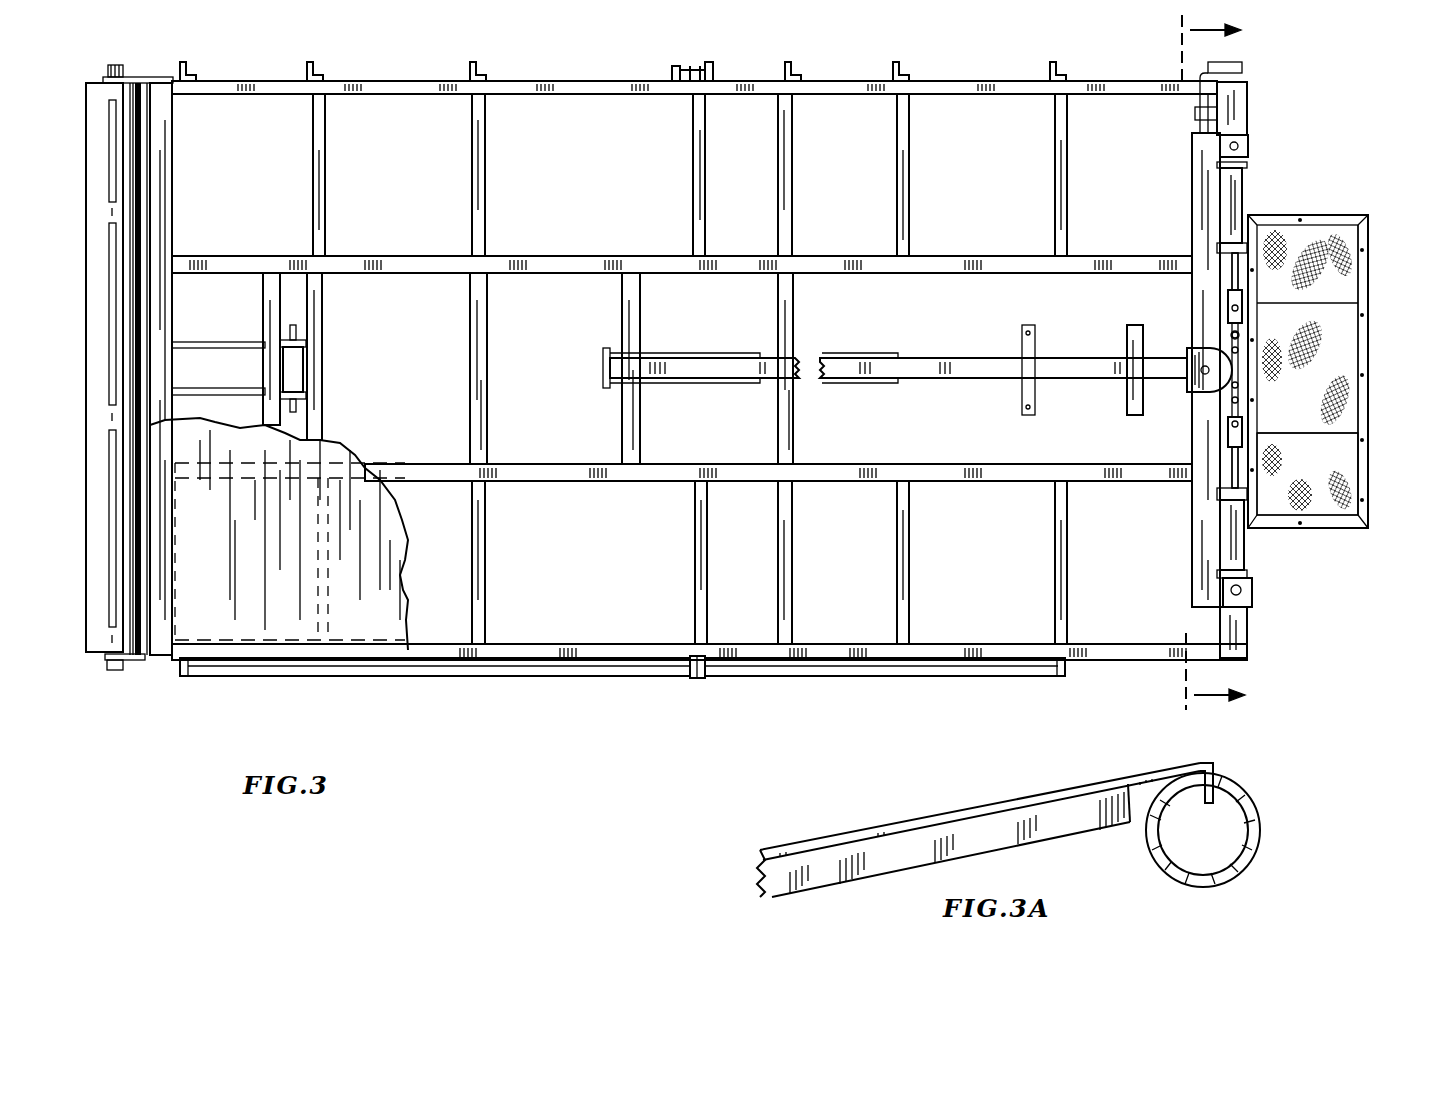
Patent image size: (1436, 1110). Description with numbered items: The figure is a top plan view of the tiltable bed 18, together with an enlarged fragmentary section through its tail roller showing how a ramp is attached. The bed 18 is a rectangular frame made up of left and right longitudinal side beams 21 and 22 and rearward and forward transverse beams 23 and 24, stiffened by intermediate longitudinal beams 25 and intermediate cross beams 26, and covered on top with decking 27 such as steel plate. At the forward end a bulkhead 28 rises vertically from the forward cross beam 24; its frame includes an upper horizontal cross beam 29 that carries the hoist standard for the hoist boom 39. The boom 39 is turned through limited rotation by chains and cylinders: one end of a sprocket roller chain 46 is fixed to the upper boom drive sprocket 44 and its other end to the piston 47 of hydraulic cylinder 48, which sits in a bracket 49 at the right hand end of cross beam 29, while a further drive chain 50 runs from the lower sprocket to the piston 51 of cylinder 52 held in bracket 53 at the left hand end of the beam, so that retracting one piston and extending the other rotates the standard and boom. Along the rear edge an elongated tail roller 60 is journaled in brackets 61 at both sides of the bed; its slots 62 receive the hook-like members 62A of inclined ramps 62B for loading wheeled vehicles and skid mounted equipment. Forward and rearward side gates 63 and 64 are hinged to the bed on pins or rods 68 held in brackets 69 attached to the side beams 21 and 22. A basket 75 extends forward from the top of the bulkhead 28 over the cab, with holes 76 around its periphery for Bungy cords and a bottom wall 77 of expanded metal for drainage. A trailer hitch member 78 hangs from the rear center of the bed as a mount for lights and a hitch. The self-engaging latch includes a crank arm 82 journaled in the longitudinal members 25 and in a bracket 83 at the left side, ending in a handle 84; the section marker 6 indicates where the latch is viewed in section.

In FIG. 3, the tiltable bed 18 is at (709, 342).
In FIG. 3, the left longitudinal side beam 21 is at (410, 94).
In FIG. 3, the right longitudinal side beam 22 is at (545, 644).
In FIG. 3, the rearward transverse beam 23 is at (173, 180).
In FIG. 3, the forward transverse beam 24 is at (1220, 620).
In FIG. 3, the intermediate longitudinal beams 25 is at (585, 256).
In FIG. 3, the intermediate cross beams 26 is at (487, 393).
In FIG. 3, the decking 27 is at (394, 542).
In FIG. 3, the bulkhead 28 is at (1192, 548).
In FIG. 3, the upper horizontal cross beam 29 is at (1192, 582).
In FIG. 3, the hoist boom 39 is at (972, 378).
In FIG. 3, the upper boom drive sprocket 44 is at (1204, 395).
In FIG. 3, the sprocket roller chain 46 is at (1240, 402).
In FIG. 3, the piston 47 is at (1228, 484).
In FIG. 3, the hydraulic cylinder 48 is at (1245, 558).
In FIG. 3, the bracket 49 is at (1252, 594).
In FIG. 3, the drive chain 50 is at (1240, 340).
In FIG. 3, the piston 51 is at (1228, 272).
In FIG. 3, the cylinder 52 is at (1242, 187).
In FIG. 3, the bracket 53 is at (1250, 145).
In FIG. 3, the tail roller 60 is at (95, 609).
In FIG. 3A, the tail roller 60 is at (1260, 842).
In FIG. 3, the brackets 61 is at (145, 82).
In FIG. 3, the slots 62 is at (105, 123).
In FIG. 3A, the slots 62 is at (1213, 775).
In FIG. 3A, the hook-like members 62A is at (1205, 803).
In FIG. 3A, the inclined ramps 62B is at (907, 860).
In FIG. 3, the forward side gate 63 is at (850, 676).
In FIG. 3, the rearward side gate 64 is at (575, 676).
In FIG. 3, the pins or rods 68 is at (695, 678).
In FIG. 3, the brackets 69 is at (477, 66).
In FIG. 3, the basket 75 is at (1330, 215).
In FIG. 3, the holes 76 is at (1358, 242).
In FIG. 3, the bottom wall 77 is at (1339, 482).
In FIG. 3, the trailer hitch member 78 is at (303, 387).
In FIG. 3, the crank arm 82 is at (1200, 135).
In FIG. 3, the bracket 83 is at (1195, 115).
In FIG. 3, the handle 84 is at (1230, 62).
In FIG. 3, the section line 6 is at (1195, 366).